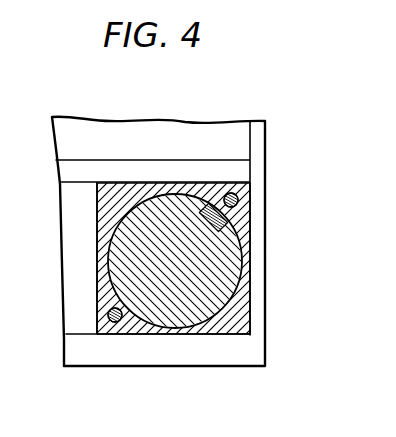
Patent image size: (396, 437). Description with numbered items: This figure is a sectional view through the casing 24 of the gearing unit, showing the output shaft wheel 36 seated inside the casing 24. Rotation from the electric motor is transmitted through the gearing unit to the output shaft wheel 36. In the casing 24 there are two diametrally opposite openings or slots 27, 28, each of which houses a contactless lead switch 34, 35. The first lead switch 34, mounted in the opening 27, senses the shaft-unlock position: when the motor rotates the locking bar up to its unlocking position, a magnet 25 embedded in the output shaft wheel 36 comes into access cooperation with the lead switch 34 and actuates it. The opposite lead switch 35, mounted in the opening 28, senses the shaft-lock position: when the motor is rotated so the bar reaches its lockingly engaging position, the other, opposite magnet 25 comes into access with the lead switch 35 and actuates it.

The casing 24 is at (240, 307).
The magnet 25 is at (238, 238).
The opening 27 is at (237, 203).
The opening 28 is at (113, 322).
The lead switch 34 is at (231, 193).
The lead switch 35 is at (108, 314).
The output shaft wheel 36 is at (206, 290).